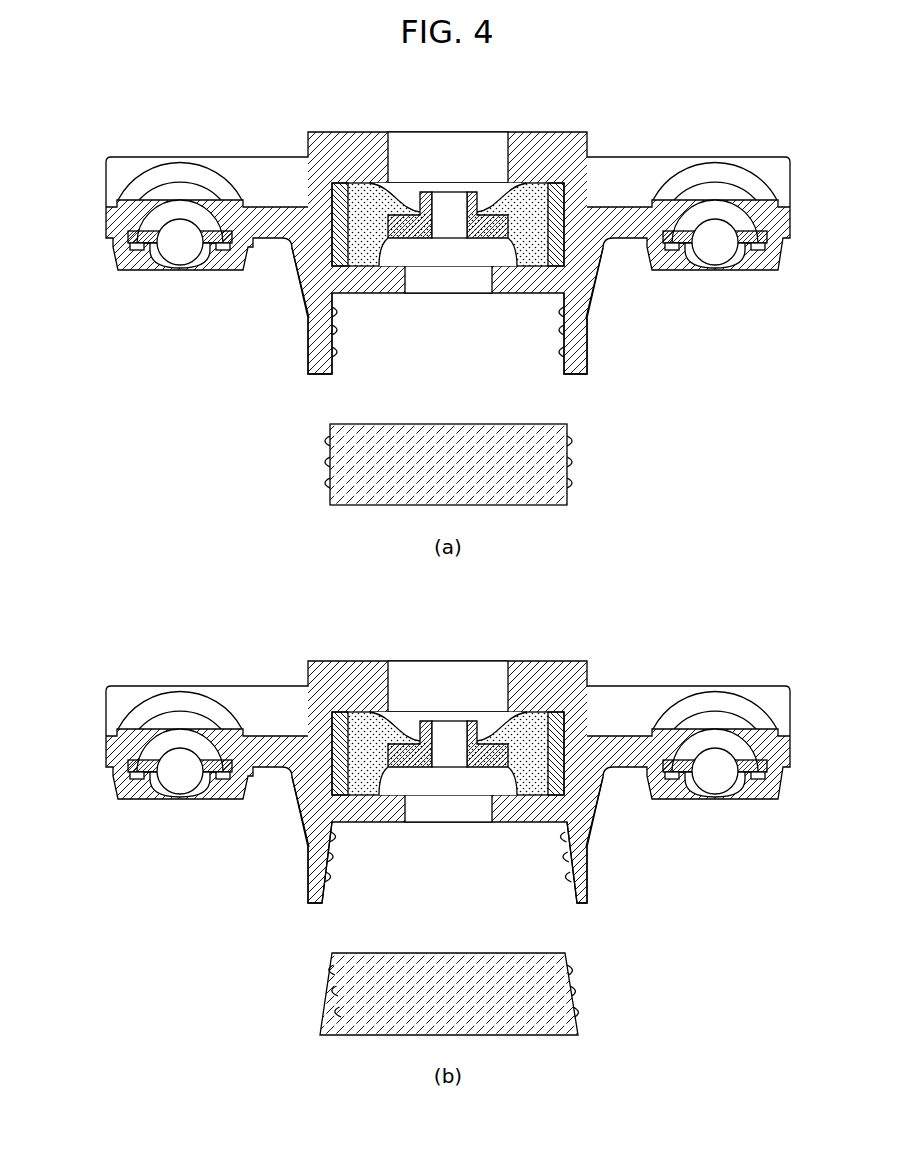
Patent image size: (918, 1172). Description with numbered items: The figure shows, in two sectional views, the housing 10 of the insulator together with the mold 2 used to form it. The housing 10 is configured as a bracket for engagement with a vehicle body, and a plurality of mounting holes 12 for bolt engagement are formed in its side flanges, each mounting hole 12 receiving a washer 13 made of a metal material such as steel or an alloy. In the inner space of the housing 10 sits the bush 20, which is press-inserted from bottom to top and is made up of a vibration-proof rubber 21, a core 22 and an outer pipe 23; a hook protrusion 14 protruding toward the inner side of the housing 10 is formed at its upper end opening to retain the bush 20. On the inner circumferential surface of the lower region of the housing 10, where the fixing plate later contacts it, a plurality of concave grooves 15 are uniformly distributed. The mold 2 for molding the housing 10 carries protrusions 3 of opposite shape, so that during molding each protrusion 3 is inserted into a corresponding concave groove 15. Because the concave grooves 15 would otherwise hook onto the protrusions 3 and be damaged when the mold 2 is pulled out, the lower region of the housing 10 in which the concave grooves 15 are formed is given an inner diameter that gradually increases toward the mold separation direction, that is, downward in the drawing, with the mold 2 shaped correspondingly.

The mold 2 is at (553, 426).
The protrusions 3 is at (570, 482).
The housing 10 is at (310, 230).
The mounting holes 12 is at (714, 226).
The washer 13 is at (735, 213).
The hook protrusion 14 is at (376, 152).
The concave grooves 15 is at (336, 355).
The bush 20 is at (551, 172).
The vibration-proof rubber 21 is at (530, 253).
The core 22 is at (475, 228).
The outer pipe 23 is at (558, 258).